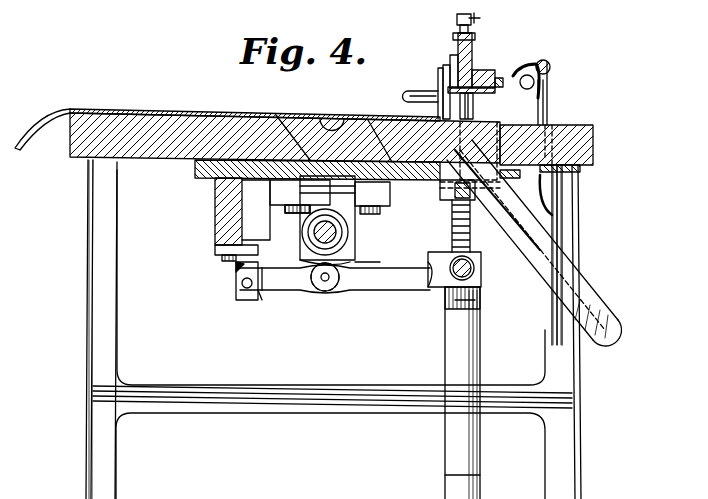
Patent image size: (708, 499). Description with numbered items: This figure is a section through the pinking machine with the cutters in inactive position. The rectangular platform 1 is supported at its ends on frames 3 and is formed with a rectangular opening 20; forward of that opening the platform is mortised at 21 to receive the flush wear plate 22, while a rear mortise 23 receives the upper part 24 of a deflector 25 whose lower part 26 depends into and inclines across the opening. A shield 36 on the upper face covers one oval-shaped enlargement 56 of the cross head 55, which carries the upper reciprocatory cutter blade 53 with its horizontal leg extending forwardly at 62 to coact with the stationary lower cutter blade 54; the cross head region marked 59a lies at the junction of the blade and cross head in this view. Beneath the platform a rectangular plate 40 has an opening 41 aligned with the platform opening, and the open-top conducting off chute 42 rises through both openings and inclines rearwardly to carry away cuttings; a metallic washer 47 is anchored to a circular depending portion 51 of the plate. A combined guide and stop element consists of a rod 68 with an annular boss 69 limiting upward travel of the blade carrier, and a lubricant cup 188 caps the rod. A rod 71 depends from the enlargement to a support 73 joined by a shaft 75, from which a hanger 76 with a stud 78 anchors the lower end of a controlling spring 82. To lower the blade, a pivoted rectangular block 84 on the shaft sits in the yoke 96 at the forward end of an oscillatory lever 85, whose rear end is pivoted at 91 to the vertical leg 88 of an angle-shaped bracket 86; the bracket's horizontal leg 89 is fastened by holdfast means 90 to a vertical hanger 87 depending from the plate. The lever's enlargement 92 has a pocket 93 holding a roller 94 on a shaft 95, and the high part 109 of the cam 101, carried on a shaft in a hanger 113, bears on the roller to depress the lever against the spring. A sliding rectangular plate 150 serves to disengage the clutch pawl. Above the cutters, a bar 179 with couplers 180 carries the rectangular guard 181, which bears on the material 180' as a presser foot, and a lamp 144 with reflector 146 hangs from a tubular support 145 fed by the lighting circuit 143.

The platform 1 is at (594, 141).
The frame 3 is at (108, 468).
The rectangular opening 20 is at (552, 130).
The mortise 21 is at (332, 130).
The wear plate 22 is at (366, 119).
The mortise 23 is at (547, 126).
The upper part of deflector 24 is at (549, 100).
The deflector 25 is at (538, 96).
The lower part of deflector 26 is at (490, 140).
The shield 36 is at (443, 70).
The rectangular plate 40 is at (212, 176).
The opening in plate 41 is at (565, 190).
The conducting off chute 42 is at (596, 298).
The metallic washer 47 is at (487, 226).
The circular depending portion 51 is at (510, 188).
The upper cutter blade 53 is at (471, 103).
The lower cutter blade 54 is at (386, 193).
The cross head 55 is at (482, 58).
The oval-shaped enlargement 56 is at (450, 58).
The housing 59a is at (496, 65).
The forward extension of blade leg 62 is at (502, 69).
The rod 68 is at (457, 19).
The annular boss 69 is at (453, 40).
The rod 71 is at (460, 216).
The depending support 73 is at (470, 320).
The shaft 75 is at (455, 267).
The hanger 76 is at (482, 452).
The stud 78 is at (482, 480).
The controlling spring 82 is at (512, 244).
The pivoted rectangular block 84 is at (474, 268).
The oscillatory lever 85 is at (385, 288).
The angle-shaped bracket 86 is at (244, 287).
The vertical hanger 87 is at (214, 226).
The vertical leg of bracket 88 is at (262, 292).
The horizontal leg of bracket 89 is at (225, 257).
The holdfast means 90 is at (236, 272).
The pivotal connection 91 is at (258, 296).
The enlargement of lever 92 is at (331, 290).
The pocket 93 is at (379, 256).
The roller 94 is at (312, 263).
The shaft 95 is at (321, 281).
The yoke 96 is at (460, 310).
The cam 101 is at (338, 226).
The high part of cam 109 is at (272, 198).
The hanger 113 is at (282, 194).
The lighting circuit 143 is at (555, 212).
The electrical lamp 144 is at (538, 78).
The tubular support 145 is at (550, 65).
The reflector 146 is at (520, 72).
The rectangular plate 150 is at (278, 115).
The bar 179 is at (402, 100).
The coupler 180 is at (414, 108).
The material 180' is at (227, 116).
The rectangular guard 181 is at (438, 79).
The lubricant cup 188 is at (476, 22).